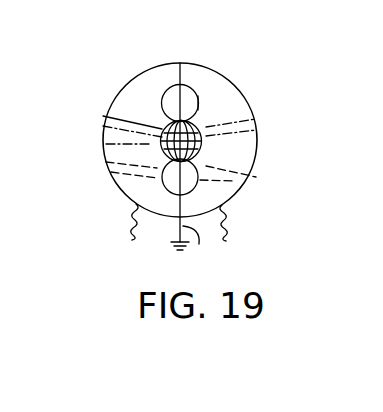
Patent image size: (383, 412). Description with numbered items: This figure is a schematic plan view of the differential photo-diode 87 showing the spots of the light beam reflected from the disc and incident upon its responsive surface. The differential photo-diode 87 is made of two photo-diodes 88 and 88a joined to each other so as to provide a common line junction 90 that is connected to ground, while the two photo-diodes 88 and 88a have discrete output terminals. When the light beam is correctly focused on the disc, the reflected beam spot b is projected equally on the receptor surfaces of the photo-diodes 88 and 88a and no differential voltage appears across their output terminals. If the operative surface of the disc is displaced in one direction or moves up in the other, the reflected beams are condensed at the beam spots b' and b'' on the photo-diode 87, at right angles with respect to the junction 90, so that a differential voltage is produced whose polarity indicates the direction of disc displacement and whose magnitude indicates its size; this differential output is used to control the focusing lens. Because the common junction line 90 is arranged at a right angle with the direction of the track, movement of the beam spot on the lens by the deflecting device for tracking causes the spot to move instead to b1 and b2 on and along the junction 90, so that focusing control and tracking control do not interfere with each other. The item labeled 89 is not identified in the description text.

The differential photo-diode 87 is at (107, 95).
The upper ball 89 is at (193, 87).
The beam spot b1 is at (198, 102).
The beam spot b' is at (246, 139).
The beam spot b'' is at (118, 147).
The beam spot b is at (226, 146).
The beam spot b2 is at (197, 180).
The photo-diode 88 is at (104, 186).
The photo-diode 88a is at (248, 184).
The common line junction 90 is at (198, 249).